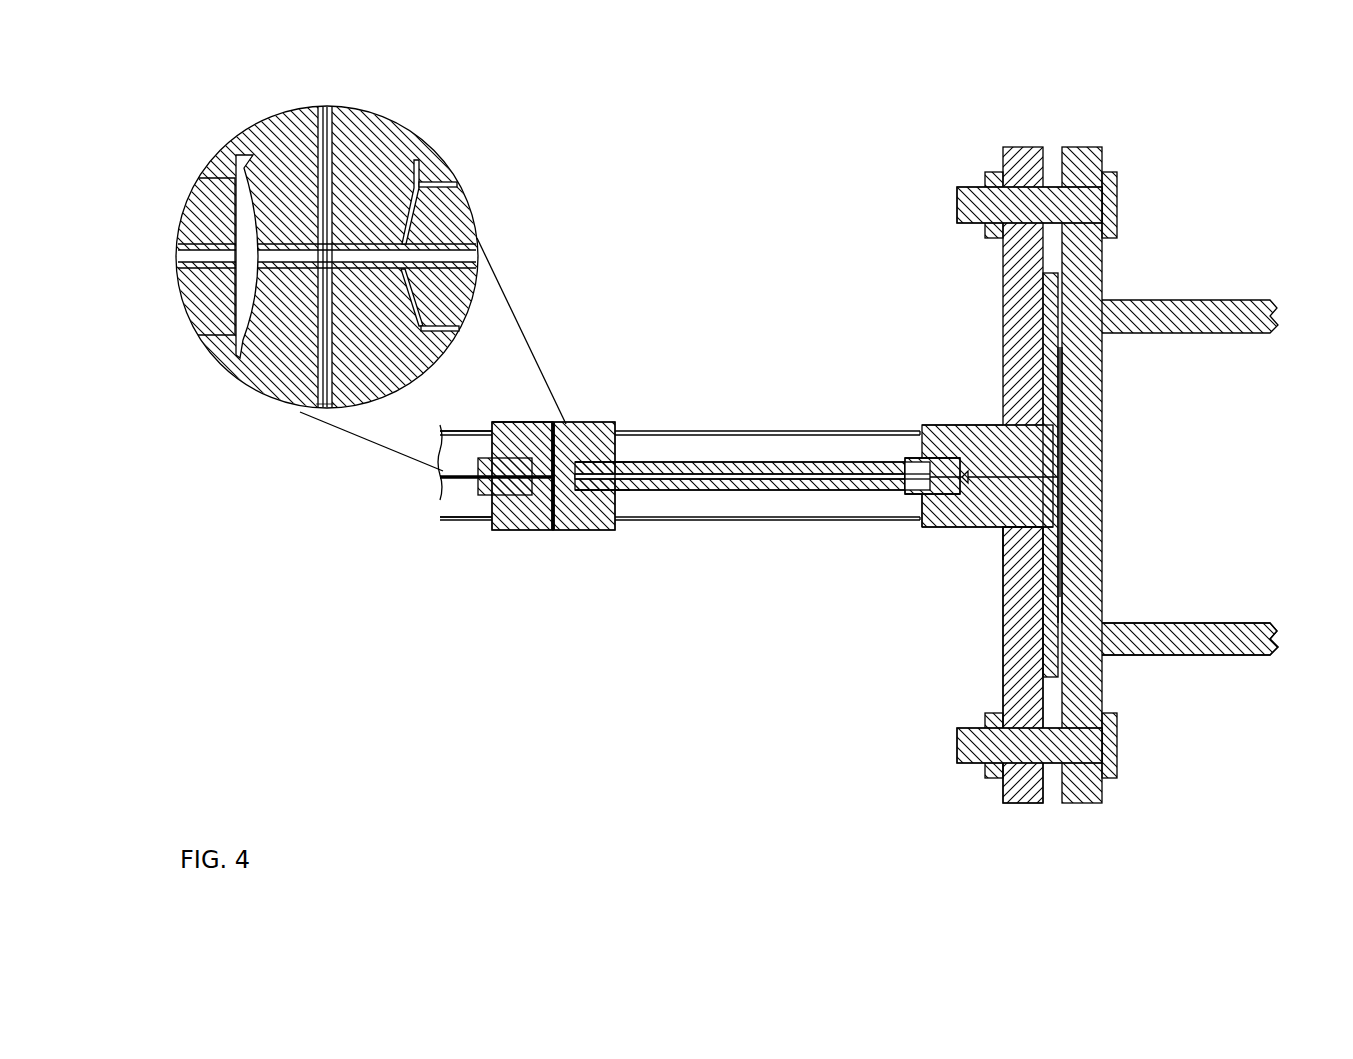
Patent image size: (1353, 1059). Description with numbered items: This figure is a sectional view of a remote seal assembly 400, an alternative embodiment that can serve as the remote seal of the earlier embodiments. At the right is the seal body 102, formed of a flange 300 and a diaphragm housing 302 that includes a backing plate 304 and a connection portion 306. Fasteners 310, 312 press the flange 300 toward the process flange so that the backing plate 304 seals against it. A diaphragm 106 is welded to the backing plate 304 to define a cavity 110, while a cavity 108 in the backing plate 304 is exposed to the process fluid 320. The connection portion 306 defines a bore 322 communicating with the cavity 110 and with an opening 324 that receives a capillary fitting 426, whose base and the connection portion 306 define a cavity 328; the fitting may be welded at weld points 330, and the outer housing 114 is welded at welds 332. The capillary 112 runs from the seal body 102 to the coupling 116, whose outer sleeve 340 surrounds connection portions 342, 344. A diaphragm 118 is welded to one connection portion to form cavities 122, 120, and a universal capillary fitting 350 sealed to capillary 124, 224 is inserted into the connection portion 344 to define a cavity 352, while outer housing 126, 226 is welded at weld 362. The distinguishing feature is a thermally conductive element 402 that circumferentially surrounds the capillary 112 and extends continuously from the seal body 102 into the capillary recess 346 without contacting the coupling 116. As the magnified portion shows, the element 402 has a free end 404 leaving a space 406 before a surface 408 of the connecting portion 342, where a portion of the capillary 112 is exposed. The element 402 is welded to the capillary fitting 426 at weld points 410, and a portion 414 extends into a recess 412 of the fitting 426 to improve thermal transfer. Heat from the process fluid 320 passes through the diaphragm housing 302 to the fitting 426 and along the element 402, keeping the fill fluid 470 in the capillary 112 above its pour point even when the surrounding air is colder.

The remote seal assembly 400 is at (818, 178).
The seal body 102 is at (935, 283).
The diaphragm housing 302 is at (977, 378).
The fastener 312 is at (957, 205).
The fastener 310 is at (957, 748).
The flange 300 is at (1003, 640).
The backing plate 304 is at (1062, 622).
The process fluid 320 is at (1223, 557).
The cavity 110 is at (1052, 390).
The diaphragm 106 is at (1060, 413).
The cavity 108 is at (1062, 445).
The bore 322 is at (1057, 476).
The cavity 328 is at (972, 482).
The opening 324 is at (947, 442).
The weld points 330 is at (925, 427).
The welds 332 is at (905, 524).
The connection portion 306 is at (995, 527).
The weld points 410 is at (904, 459).
The recess 412 is at (910, 458).
The capillary fitting 426 is at (870, 520).
The portion 414 is at (908, 490).
The outer housing 114 is at (770, 432).
The fill fluid 470 is at (700, 492).
The capillary 112 is at (477, 247).
The thermally conductive element 402 is at (462, 220).
The capillary recess 346 is at (622, 450).
The outer sleeve 340 is at (585, 432).
The coupling 116 is at (572, 424).
The weld 362 is at (492, 425).
The connection portion 342 is at (401, 391).
The connection portion 344 is at (222, 355).
The universal capillary fitting 350 is at (478, 460).
The capillary 124 is at (440, 480).
The capillary 224 is at (458, 514).
The outer housing 126 is at (455, 520).
The outer housing 226 is at (449, 512).
The cavity 352 is at (262, 150).
The cavity 122 is at (323, 106).
The cavity 120 is at (331, 106).
The diaphragm 118 is at (318, 410).
The surface 408 is at (423, 163).
The free end 404 is at (424, 186).
The space 406 is at (447, 162).